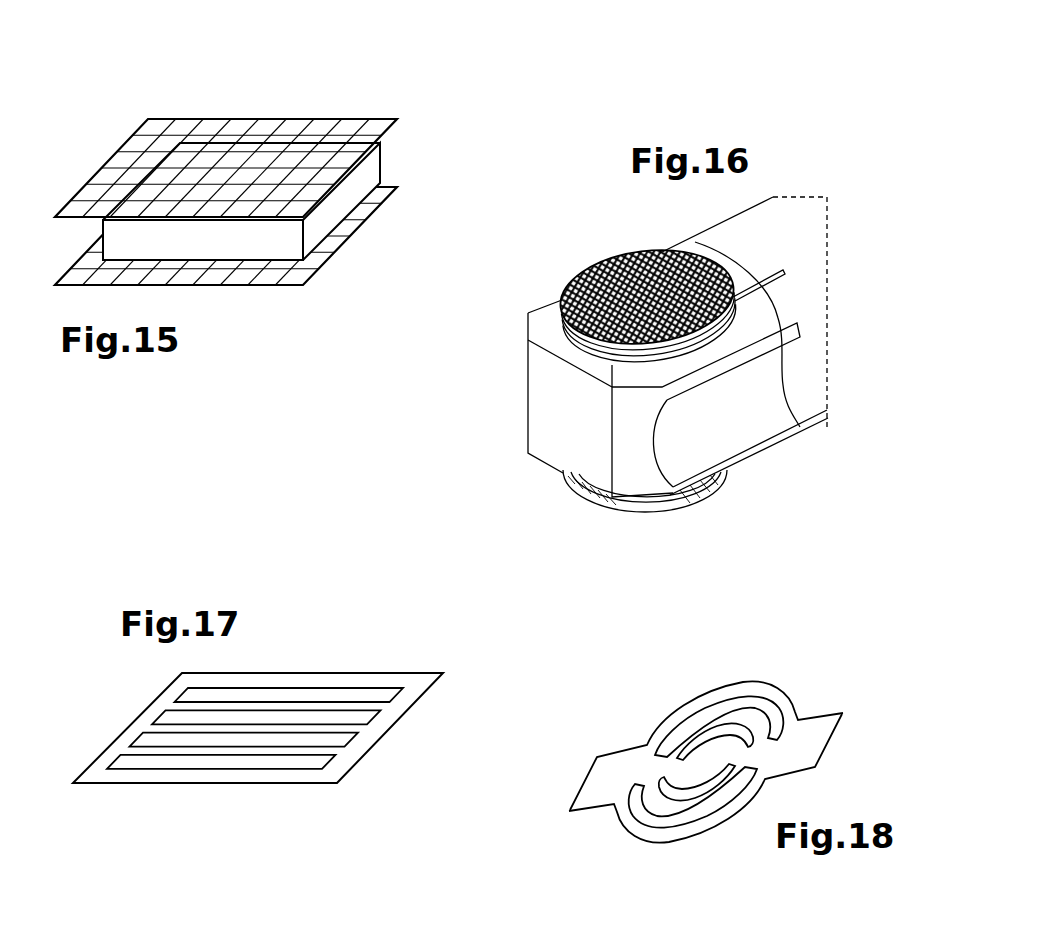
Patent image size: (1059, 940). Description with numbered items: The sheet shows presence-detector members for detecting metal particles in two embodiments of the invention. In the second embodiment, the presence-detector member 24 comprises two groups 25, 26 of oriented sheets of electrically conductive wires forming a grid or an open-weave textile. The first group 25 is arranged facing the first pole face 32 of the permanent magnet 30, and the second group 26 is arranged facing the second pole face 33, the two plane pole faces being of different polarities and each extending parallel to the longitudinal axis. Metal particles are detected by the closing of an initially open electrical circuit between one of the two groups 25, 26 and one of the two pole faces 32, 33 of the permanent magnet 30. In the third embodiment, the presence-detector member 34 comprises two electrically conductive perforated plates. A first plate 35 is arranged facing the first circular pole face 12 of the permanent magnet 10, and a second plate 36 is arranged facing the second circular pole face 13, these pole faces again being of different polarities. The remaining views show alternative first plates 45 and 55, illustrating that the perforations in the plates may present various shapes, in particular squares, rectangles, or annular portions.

In FIG. 16, the permanent magnet 10 is at (608, 365).
In FIG. 16, the first pole face 12 is at (667, 348).
In FIG. 16, the second pole face 13 is at (685, 507).
In FIG. 15, the presence-detector member 24 is at (240, 111).
In FIG. 15, the first group of oriented sheets of electrically conductive wires 25 is at (377, 132).
In FIG. 15, the second group of oriented sheets of electrically conductive wires 26 is at (226, 275).
In FIG. 15, the permanent magnet 30 is at (337, 220).
In FIG. 15, the first pole face 32 is at (213, 147).
In FIG. 15, the second pole face 33 is at (217, 263).
In FIG. 16, the presence-detector member 34 is at (601, 254).
In FIG. 16, the first perforated plate 35 is at (733, 323).
In FIG. 16, the second perforated plate 36 is at (650, 529).
In FIG. 17, the first perforated plate 45 is at (353, 680).
In FIG. 18, the first perforated plate 55 is at (627, 765).